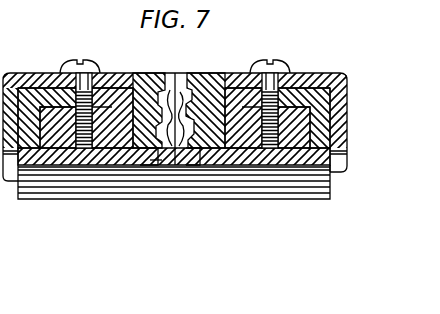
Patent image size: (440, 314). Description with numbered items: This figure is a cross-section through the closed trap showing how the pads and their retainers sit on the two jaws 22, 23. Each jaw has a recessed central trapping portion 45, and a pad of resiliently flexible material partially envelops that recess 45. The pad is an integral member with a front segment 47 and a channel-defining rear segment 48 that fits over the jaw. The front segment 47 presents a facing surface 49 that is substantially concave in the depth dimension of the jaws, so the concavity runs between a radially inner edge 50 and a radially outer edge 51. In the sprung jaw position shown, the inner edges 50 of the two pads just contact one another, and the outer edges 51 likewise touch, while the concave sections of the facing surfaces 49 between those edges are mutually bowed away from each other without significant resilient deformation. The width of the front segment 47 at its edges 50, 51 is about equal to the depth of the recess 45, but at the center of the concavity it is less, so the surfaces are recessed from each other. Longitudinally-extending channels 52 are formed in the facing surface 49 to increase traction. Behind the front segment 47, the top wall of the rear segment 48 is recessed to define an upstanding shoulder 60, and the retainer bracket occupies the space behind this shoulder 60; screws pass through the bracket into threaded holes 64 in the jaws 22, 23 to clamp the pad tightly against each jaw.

The rear segment 48 is at (34, 83).
The shoulder 60 is at (128, 78).
The longitudinally-extending channels 52 is at (160, 80).
The radially outer edge 51 is at (160, 98).
The front segment 47 is at (207, 75).
The jaw 22 is at (55, 166).
The jaw 23 is at (302, 170).
The threaded holes 64 is at (88, 160).
The recess 45 is at (132, 160).
The radially inner edge 50 is at (151, 162).
The facing surface 49 is at (193, 157).